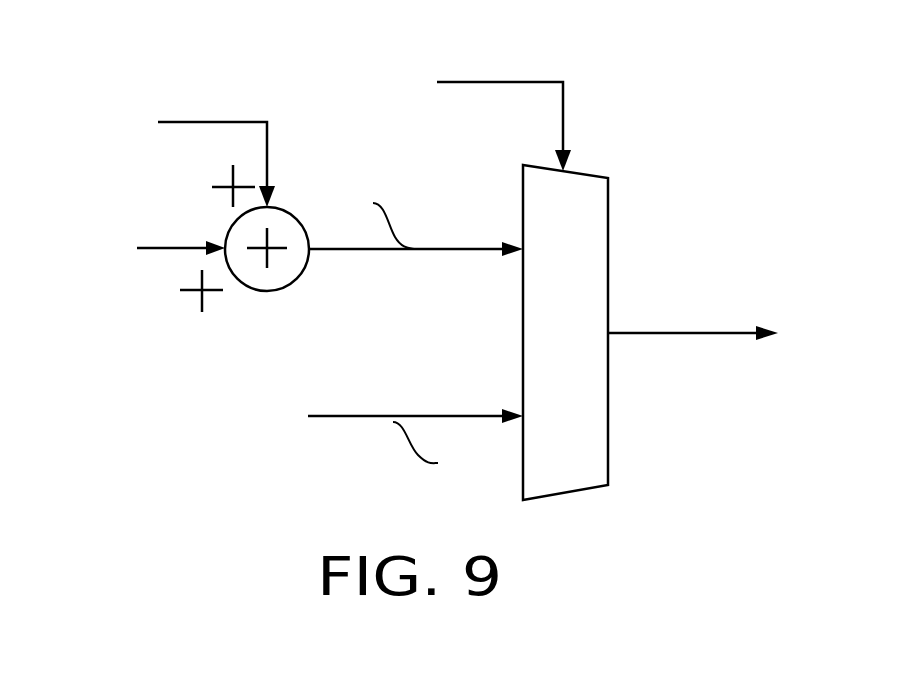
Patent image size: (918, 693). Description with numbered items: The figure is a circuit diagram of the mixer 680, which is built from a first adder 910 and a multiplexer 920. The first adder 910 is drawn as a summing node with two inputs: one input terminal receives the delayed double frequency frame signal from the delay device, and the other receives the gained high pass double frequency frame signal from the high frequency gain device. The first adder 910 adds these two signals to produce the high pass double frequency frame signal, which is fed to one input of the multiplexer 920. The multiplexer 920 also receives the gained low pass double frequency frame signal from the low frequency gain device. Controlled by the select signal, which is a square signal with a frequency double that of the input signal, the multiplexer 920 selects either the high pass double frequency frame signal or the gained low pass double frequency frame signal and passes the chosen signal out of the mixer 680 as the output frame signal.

The mixer 680 is at (187, 50).
The first adder 910 is at (228, 228).
The multiplexer 920 is at (608, 375).